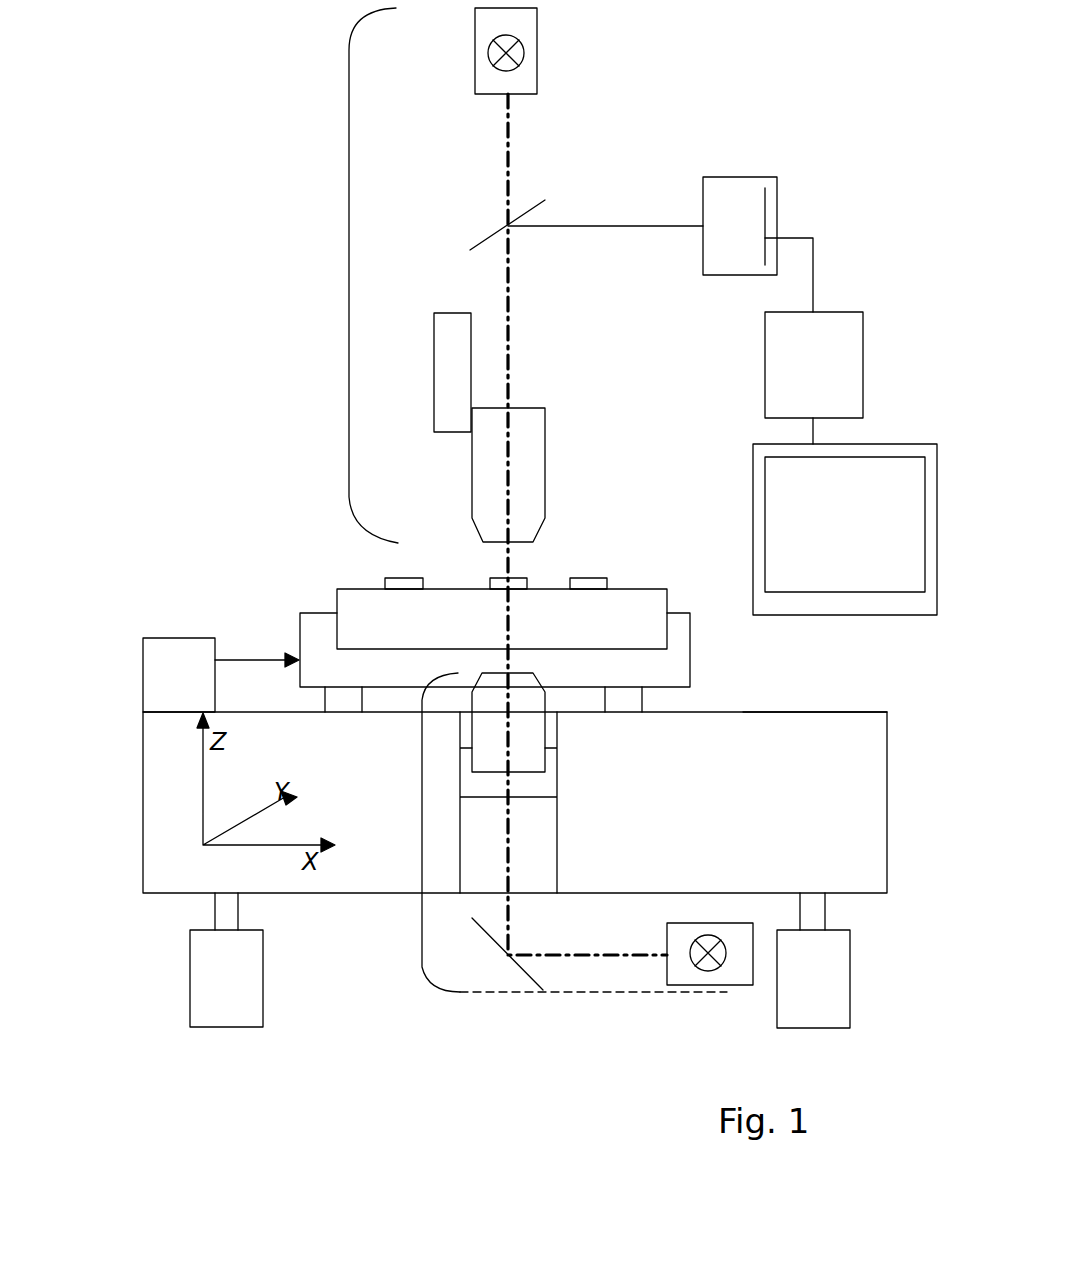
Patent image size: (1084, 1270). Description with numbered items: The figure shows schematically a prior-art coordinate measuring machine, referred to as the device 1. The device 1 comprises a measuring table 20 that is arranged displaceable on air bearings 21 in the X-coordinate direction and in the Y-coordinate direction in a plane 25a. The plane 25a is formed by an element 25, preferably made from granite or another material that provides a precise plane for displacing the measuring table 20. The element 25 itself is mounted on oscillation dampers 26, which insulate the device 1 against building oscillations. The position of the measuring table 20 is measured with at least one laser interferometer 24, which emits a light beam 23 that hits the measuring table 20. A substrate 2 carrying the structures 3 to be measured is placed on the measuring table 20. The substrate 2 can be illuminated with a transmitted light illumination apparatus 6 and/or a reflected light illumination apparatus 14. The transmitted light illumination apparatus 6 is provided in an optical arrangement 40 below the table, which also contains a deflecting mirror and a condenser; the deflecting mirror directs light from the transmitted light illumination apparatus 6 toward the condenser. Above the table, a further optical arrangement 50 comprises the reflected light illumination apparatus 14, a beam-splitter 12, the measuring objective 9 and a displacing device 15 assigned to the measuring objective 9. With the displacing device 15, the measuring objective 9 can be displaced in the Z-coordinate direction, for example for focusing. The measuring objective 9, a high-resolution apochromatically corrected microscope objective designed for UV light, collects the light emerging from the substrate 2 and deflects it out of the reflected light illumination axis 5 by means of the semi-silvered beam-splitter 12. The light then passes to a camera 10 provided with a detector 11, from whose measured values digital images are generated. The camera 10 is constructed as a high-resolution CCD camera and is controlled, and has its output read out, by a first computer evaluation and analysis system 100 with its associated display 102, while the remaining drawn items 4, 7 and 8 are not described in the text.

The device 1 is at (312, 493).
The substrate 2 is at (363, 603).
The structures 3 is at (520, 580).
The lower objective 4 is at (510, 737).
The reflected light illumination axis 5 is at (510, 370).
The transmitted light illumination apparatus 6 is at (692, 985).
The mirror 7 is at (530, 980).
The holder 8 is at (483, 735).
The measuring objective 9 is at (484, 470).
The camera 10 is at (730, 278).
The detector 11 is at (765, 212).
The beam-splitter 12 is at (492, 237).
The reflected light illumination apparatus 14 is at (475, 40).
The displacing device 15 is at (447, 360).
The measuring table 20 is at (683, 665).
The air bearings 21 is at (348, 700).
The light beam 23 is at (267, 660).
The laser interferometer 24 is at (168, 662).
The element 25 is at (167, 821).
The plane 25a is at (743, 710).
The oscillation dampers 26 is at (202, 990).
The optical arrangement 40 is at (422, 917).
The optical arrangement 50 is at (349, 250).
The computer evaluation and analysis system 100 is at (775, 372).
The display 102 is at (845, 529).